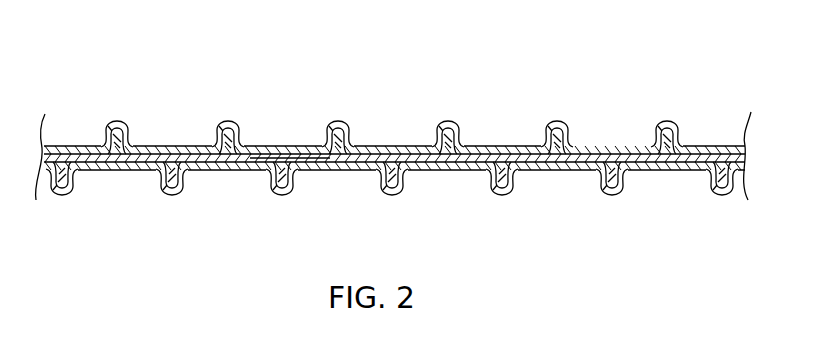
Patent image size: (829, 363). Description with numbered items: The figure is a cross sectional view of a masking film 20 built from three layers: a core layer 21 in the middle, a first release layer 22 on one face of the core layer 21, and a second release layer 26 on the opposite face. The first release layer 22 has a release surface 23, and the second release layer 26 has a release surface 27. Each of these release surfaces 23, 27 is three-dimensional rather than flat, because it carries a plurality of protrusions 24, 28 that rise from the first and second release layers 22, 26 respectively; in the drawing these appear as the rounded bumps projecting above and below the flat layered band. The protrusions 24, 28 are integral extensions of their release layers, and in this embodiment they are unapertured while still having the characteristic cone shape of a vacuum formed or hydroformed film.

The masking film 20 is at (497, 100).
The core layer 21 is at (166, 145).
The first release layer 22 is at (360, 144).
The release surface 23 is at (287, 148).
The protrusions 24 is at (452, 118).
The second release layer 26 is at (668, 171).
The release surface 27 is at (553, 171).
The protrusions 28 is at (287, 198).